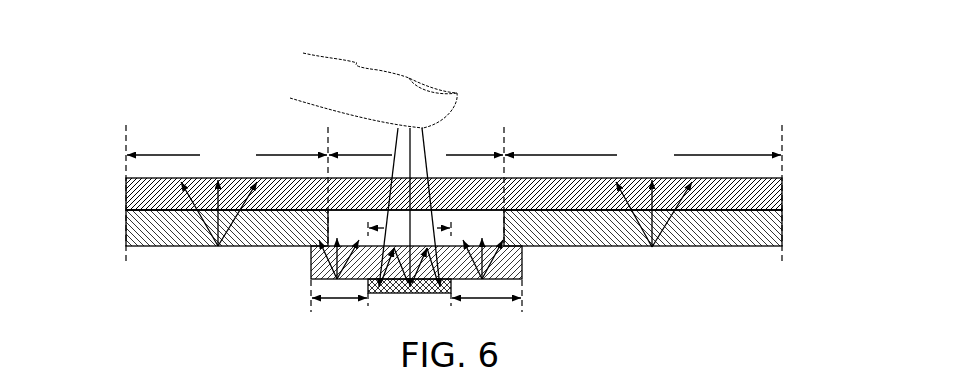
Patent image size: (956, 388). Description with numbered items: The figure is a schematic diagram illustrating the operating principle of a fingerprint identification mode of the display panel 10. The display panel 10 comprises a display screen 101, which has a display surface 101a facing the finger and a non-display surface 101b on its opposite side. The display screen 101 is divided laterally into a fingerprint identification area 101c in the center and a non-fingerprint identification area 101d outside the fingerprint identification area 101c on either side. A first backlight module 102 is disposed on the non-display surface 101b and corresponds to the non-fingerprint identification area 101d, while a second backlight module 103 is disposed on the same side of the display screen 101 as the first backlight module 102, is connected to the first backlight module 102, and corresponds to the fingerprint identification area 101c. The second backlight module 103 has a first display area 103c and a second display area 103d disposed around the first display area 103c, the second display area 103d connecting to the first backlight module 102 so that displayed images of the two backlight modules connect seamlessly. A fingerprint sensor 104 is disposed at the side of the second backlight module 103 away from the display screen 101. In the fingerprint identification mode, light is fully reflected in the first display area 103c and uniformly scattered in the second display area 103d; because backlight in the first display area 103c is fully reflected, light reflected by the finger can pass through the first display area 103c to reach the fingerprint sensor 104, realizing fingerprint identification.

The display panel 10 is at (155, 110).
The display screen 101 is at (127, 185).
The display surface 101a is at (784, 178).
The non-display surface 101b is at (784, 208).
The first backlight module 102 is at (784, 240).
The fingerprint identification area 101c is at (416, 156).
The non-fingerprint identification area 101d is at (454, 156).
The second backlight module 103 is at (310, 264).
The first display area 103c is at (409, 228).
The second display area 103d is at (416, 311).
The fingerprint sensor 104 is at (400, 294).